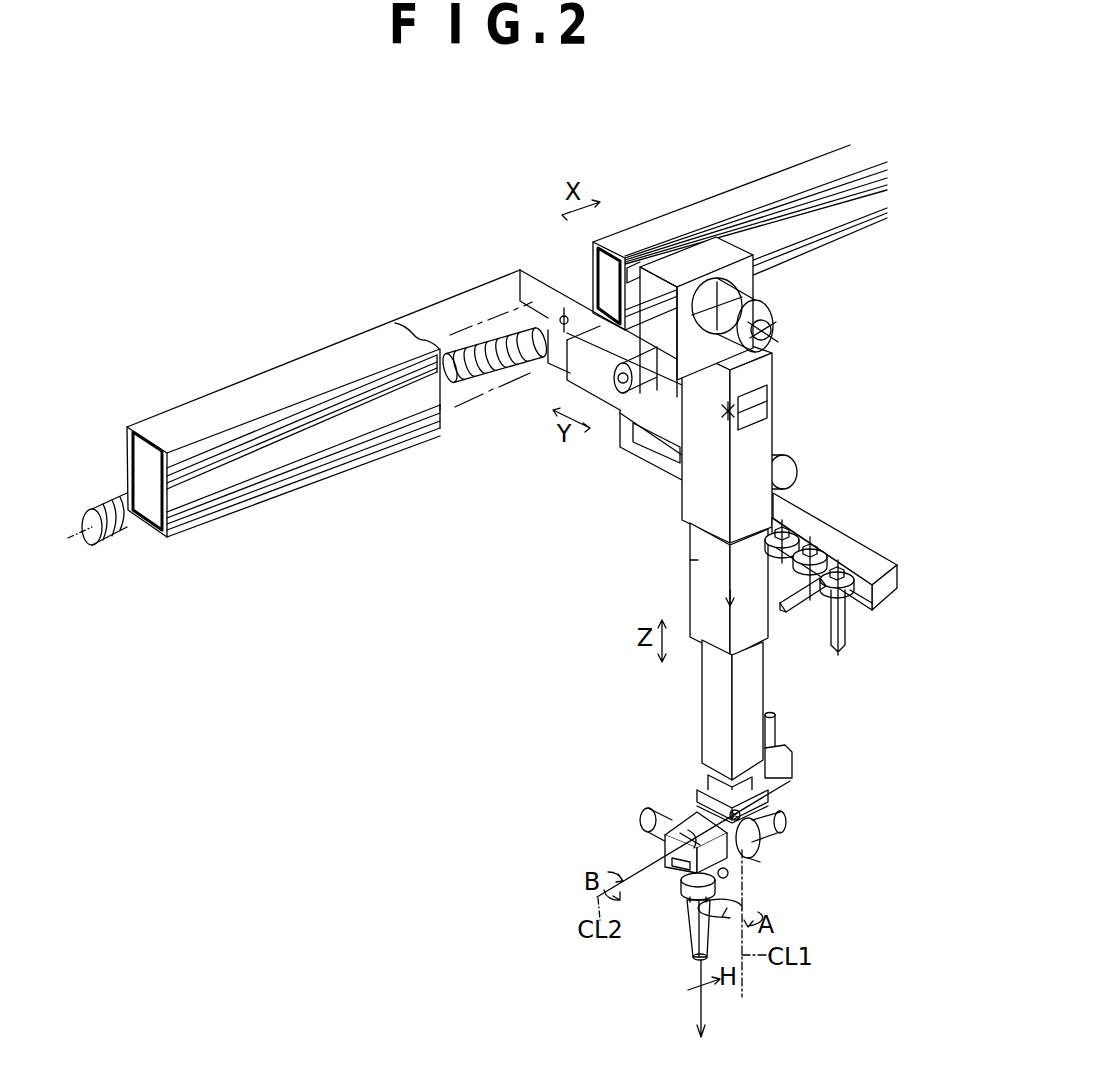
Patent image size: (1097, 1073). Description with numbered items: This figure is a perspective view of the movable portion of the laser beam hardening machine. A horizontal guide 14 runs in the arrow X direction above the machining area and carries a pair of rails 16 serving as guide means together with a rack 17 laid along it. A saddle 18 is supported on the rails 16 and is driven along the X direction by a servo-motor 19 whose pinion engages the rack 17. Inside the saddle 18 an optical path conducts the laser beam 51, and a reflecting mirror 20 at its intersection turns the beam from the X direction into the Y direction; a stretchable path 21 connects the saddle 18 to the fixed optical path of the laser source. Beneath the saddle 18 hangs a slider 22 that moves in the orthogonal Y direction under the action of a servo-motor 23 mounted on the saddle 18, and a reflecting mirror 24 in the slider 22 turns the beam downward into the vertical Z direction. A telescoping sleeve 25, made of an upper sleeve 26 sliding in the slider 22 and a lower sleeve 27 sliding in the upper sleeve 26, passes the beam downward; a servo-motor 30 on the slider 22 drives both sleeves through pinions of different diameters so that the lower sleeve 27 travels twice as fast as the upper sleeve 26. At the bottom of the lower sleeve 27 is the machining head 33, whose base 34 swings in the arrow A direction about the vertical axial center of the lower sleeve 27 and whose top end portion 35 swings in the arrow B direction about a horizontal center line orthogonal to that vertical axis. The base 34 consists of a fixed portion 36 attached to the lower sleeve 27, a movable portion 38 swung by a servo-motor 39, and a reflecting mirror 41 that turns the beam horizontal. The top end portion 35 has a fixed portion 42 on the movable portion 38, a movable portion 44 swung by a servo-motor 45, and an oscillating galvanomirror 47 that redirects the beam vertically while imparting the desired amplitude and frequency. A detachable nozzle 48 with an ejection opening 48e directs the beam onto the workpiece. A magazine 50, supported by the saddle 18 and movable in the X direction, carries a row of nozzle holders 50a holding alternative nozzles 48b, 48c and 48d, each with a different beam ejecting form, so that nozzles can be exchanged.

The guide 14 is at (207, 410).
The rails 16 is at (345, 380).
The rack 17 is at (290, 440).
The saddle 18 is at (553, 276).
The servo-motor 19 is at (760, 302).
The reflecting mirror 20 is at (547, 295).
The stretchable path 21 is at (118, 528).
The slider 22 is at (685, 506).
The servo-motor 23 is at (617, 368).
The reflecting mirror 24 is at (737, 412).
The sleeve 25 is at (680, 581).
The upper sleeve 26 is at (690, 553).
The lower sleeve 27 is at (705, 695).
The servo-motor 30 is at (790, 472).
The machining head 33 is at (686, 782).
The base 34 is at (705, 793).
The top end portion 35 is at (654, 849).
The fixed portion 36 is at (775, 787).
The movable portion 38 is at (765, 801).
The servo-motor 39 is at (776, 736).
The reflecting mirror 41 is at (784, 818).
The fixed portion 42 is at (745, 860).
The movable portion 44 is at (684, 893).
The servo-motor 45 is at (768, 836).
The galvanomirror 47 is at (676, 800).
The nozzle 48 is at (688, 940).
The nozzle 48b is at (800, 530).
The nozzle 48c is at (847, 630).
The nozzle 48d is at (787, 612).
The ejection opening 48e is at (690, 965).
The magazine 50 is at (888, 560).
The nozzle holders 50a is at (895, 592).
The laser beam 51 is at (701, 1010).